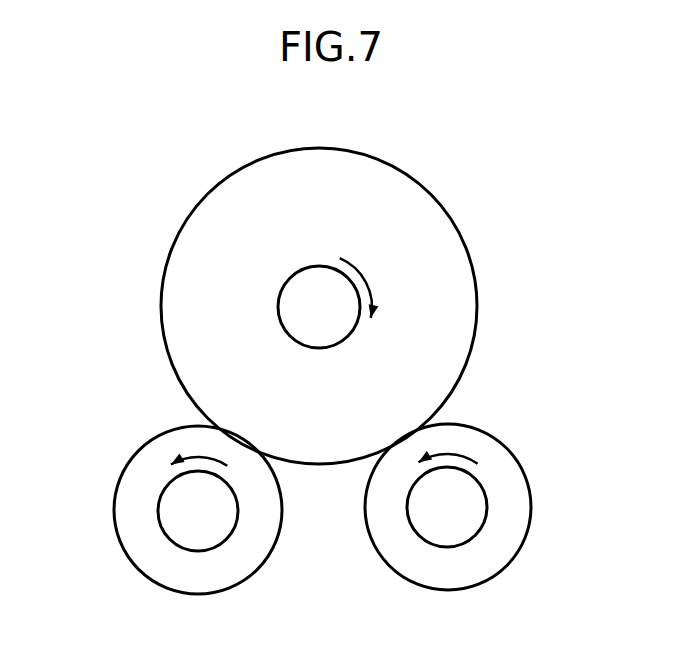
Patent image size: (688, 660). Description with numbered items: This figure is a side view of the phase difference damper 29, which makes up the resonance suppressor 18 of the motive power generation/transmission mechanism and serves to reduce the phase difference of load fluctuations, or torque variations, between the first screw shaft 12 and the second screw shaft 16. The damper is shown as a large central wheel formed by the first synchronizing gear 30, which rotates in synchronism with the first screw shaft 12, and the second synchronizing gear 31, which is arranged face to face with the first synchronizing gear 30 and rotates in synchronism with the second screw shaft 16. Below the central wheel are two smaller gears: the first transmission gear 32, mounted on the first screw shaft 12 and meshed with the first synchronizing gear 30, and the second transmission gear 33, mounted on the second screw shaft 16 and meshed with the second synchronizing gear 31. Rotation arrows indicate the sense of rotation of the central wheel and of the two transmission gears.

The phase difference damper 29 is at (192, 200).
The resonance suppressor 18 is at (321, 295).
The first synchronizing gear 30 is at (425, 185).
The second synchronizing gear 31 is at (433, 252).
The second screw shaft 16 is at (163, 488).
The second transmission gear 33 is at (123, 502).
The first screw shaft 12 is at (482, 483).
The first transmission gear 32 is at (518, 510).